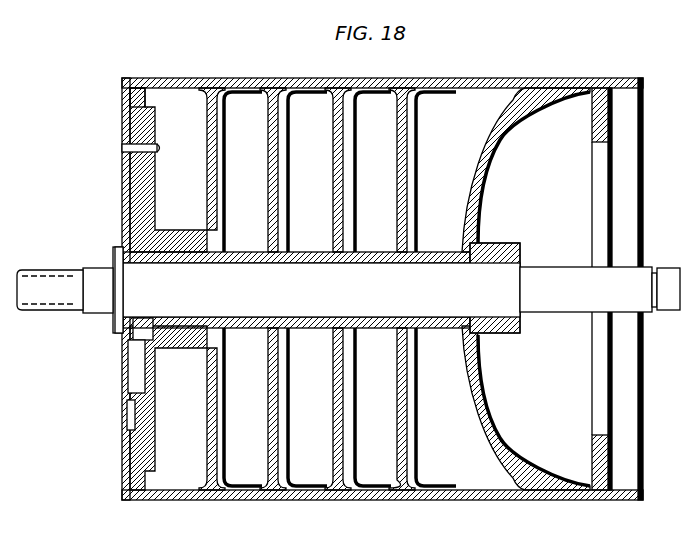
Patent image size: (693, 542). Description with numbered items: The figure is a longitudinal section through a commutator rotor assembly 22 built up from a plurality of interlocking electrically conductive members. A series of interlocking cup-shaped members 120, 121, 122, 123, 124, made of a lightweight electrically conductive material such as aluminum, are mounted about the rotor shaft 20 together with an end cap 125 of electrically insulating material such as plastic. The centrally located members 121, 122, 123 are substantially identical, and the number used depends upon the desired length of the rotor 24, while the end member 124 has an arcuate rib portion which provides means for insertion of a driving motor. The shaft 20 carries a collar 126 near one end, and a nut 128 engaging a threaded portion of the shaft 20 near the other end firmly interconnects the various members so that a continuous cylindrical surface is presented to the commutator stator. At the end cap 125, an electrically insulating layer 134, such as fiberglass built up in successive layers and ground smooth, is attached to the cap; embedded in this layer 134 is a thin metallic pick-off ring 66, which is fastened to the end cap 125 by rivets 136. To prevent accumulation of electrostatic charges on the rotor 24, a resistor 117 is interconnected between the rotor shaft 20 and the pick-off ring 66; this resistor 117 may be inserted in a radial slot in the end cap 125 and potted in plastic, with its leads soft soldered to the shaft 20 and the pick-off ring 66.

The rotor shaft 20 is at (42, 282).
The rotor assembly 22 is at (658, 328).
The rotor 24 is at (527, 81).
The pick-off ring 66 is at (125, 172).
The resistor 117 is at (140, 372).
The cup-shaped member 120 is at (180, 82).
The cup-shaped member 121 is at (245, 82).
The cup-shaped member 122 is at (306, 82).
The cup-shaped member 123 is at (372, 82).
The end member 124 is at (462, 83).
The end cap 125 is at (138, 118).
The collar 126 is at (116, 246).
The nut 128 is at (485, 246).
The electrically insulating layer 134 is at (122, 108).
The rivets 136 is at (124, 150).